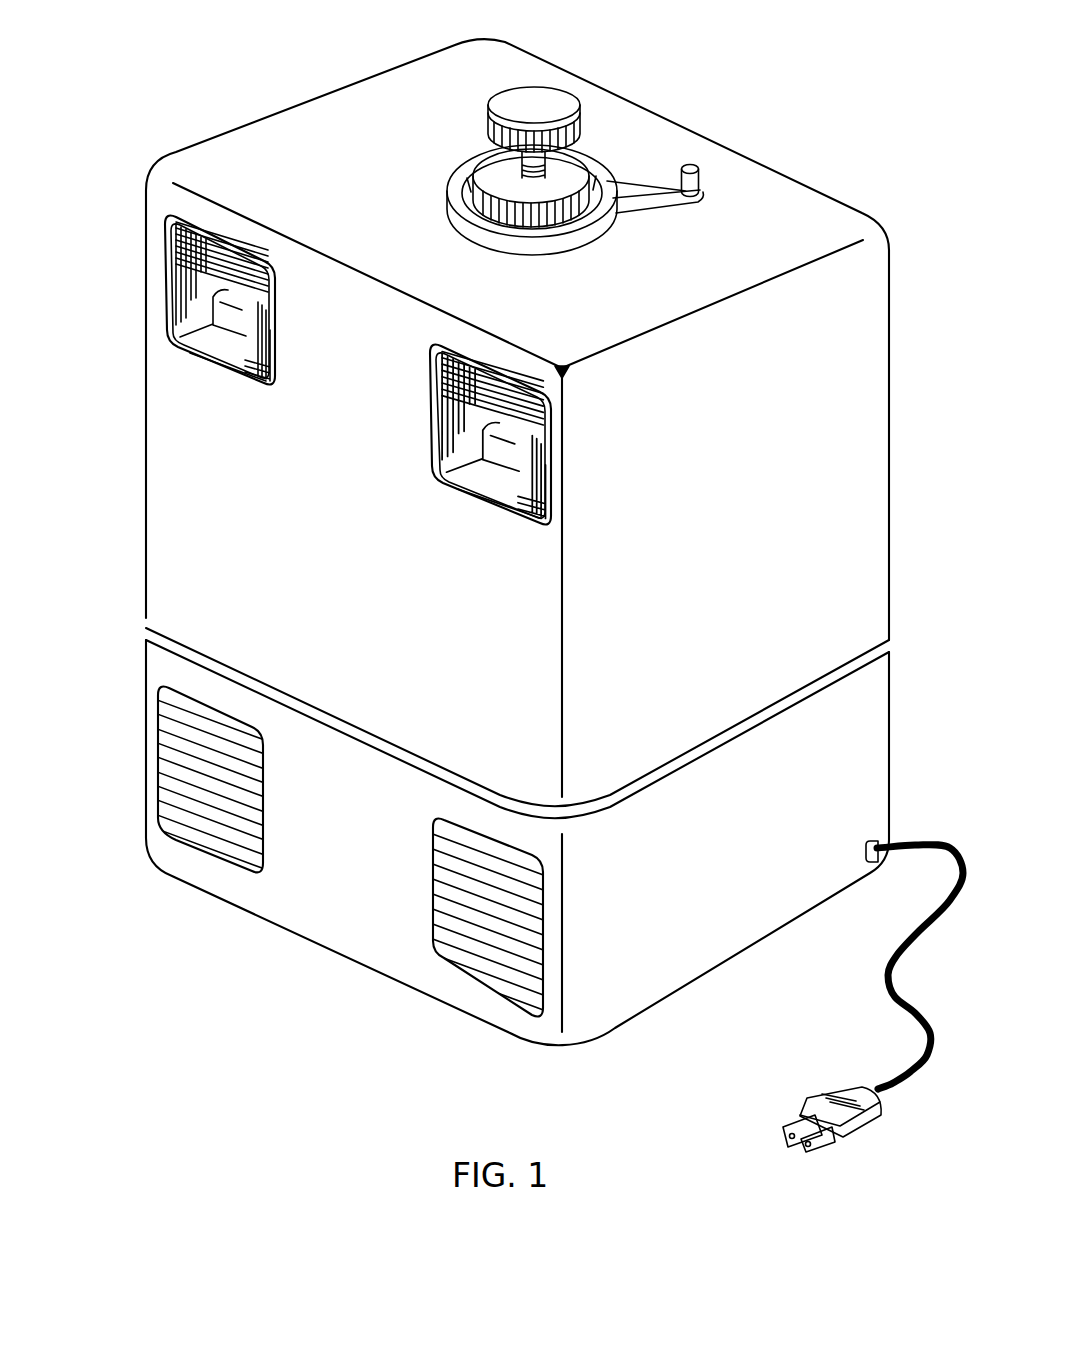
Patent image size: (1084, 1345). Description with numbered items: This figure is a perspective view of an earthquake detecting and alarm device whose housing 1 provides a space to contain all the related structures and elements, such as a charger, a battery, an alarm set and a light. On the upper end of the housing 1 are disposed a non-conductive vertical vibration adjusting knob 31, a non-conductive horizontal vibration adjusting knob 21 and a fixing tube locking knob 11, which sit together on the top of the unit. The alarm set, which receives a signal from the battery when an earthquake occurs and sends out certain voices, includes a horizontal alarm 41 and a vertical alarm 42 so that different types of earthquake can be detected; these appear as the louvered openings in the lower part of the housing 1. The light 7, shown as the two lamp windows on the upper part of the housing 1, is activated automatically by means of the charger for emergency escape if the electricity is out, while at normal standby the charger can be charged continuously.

The housing 1 is at (312, 129).
The light 7 is at (470, 503).
The fixing tube locking knob 11 is at (628, 195).
The non-conductive horizontal vibration adjusting knob 21 is at (563, 168).
The non-conductive vertical vibration adjusting knob 31 is at (525, 114).
The horizontal alarm 41 is at (210, 863).
The vertical alarm 42 is at (437, 970).